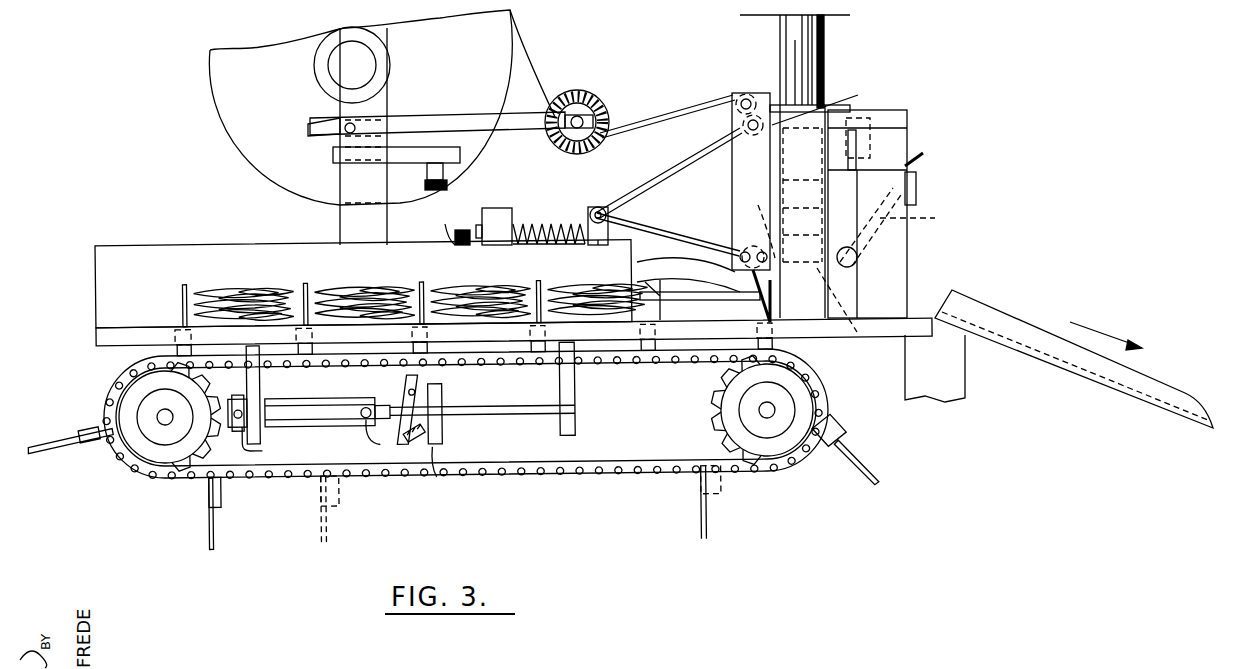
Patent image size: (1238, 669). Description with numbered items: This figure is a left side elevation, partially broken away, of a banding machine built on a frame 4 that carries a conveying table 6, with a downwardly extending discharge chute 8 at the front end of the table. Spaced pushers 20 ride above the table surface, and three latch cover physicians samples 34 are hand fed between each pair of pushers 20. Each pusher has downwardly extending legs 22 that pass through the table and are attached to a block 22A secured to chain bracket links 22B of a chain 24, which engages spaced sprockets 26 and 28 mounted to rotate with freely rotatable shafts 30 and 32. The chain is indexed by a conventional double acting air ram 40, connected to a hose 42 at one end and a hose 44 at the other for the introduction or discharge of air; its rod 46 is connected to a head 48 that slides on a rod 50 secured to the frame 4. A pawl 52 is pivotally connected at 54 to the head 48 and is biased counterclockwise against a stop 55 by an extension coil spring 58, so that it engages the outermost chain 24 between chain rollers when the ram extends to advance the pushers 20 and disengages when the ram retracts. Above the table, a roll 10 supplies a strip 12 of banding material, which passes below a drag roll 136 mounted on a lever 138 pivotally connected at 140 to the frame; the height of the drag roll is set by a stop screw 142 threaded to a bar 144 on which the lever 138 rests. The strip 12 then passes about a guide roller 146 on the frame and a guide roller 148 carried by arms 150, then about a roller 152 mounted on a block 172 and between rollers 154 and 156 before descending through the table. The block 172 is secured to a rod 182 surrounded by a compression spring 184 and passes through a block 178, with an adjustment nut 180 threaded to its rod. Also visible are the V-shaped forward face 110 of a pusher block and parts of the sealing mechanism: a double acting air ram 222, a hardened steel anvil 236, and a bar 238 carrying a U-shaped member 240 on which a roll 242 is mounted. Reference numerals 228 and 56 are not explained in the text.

The roll 10 is at (272, 90).
The frame 4 is at (350, 91).
The bar 144 is at (455, 145).
The pivot 140 is at (346, 132).
The lever 138 is at (528, 124).
The stop screw 142 is at (447, 178).
The drag roll 136 is at (600, 110).
The strip of banding material 12 is at (607, 140).
The guide roller 148 is at (752, 125).
The roller 154 is at (738, 244).
The roller 156 is at (745, 200).
The roller 152 is at (610, 213).
The guide roller 146 is at (746, 90).
The arms 150 is at (827, 99).
The double acting air ram 222 is at (826, 26).
The rod 228 is at (805, 56).
The bar 238 is at (918, 188).
The U-shaped member 240 is at (929, 213).
The roll 242 is at (858, 261).
The anvil 236 is at (822, 315).
The forward face 110 is at (661, 300).
The block 178 is at (497, 212).
The rod 182 is at (522, 224).
The compression spring 184 is at (546, 224).
The adjustment nut 180 is at (462, 228).
The block 172 is at (598, 242).
The conveying table 6 is at (512, 325).
The pushers 20 is at (189, 288).
The latch cover physicians samples 34 is at (272, 302).
The slot 56 is at (412, 325).
The sprocket 28 is at (818, 424).
The chain 24 is at (627, 380).
The sprocket 26 is at (148, 466).
The shaft 30 is at (160, 415).
The shaft 32 is at (772, 414).
The legs 22 is at (207, 500).
The block 22A is at (221, 494).
The chain bracket links 22B is at (173, 472).
The hose 42 is at (265, 403).
The hose 44 is at (468, 402).
The air ram 40 is at (313, 414).
The rod 46 is at (370, 410).
The head 48 is at (445, 418).
The rod 50 is at (498, 410).
The pivot 54 is at (412, 392).
The pawl 52 is at (430, 388).
The stop 55 is at (440, 440).
The extension coil spring 58 is at (444, 471).
The discharge chute 8 is at (1137, 392).